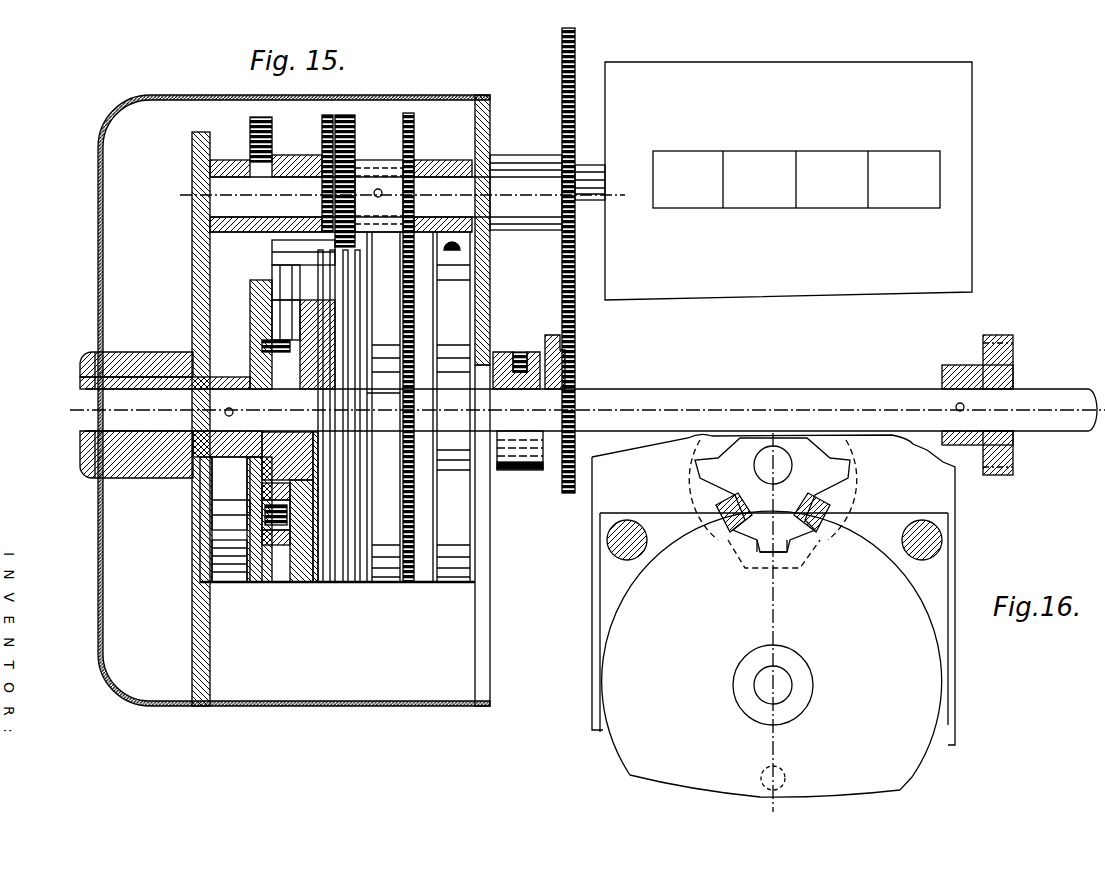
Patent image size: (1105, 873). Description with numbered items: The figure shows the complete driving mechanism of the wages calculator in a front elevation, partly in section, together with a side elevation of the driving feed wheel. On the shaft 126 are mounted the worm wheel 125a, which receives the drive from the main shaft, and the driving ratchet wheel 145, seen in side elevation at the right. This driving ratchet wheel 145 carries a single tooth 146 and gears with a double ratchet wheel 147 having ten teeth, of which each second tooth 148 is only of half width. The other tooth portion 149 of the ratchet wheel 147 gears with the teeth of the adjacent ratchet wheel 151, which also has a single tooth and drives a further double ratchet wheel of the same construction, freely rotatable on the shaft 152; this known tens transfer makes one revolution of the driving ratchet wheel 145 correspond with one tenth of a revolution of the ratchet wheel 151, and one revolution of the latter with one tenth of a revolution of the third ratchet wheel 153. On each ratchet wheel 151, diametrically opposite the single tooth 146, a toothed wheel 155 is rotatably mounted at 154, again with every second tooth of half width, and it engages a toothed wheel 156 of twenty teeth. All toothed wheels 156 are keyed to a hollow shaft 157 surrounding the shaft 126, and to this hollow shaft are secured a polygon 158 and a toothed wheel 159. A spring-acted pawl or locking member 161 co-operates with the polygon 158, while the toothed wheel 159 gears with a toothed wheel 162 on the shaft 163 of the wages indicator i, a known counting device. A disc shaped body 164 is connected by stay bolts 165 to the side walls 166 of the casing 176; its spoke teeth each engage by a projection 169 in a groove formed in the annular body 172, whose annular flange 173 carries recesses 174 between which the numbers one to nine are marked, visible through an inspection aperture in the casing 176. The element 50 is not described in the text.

In FIG. 15, the plate 50 is at (318, 545).
In FIG. 15, the driving ratchet wheel 145 is at (252, 358).
In FIG. 15, the single tooth 146 is at (255, 272).
In FIG. 16, the single tooth 146 is at (800, 530).
In FIG. 15, the double ratchet wheel 147 is at (270, 168).
In FIG. 16, the double ratchet wheel 147 is at (762, 487).
In FIG. 15, the half-width tooth 148 is at (262, 126).
In FIG. 16, the half-width tooth 148 is at (725, 505).
In FIG. 15, the tooth portion 149 is at (332, 114).
In FIG. 15, the ratchet wheel 151 is at (346, 583).
In FIG. 15, the shaft 152 is at (210, 187).
In FIG. 15, the third ratchet wheel 153 is at (423, 583).
In FIG. 15, the mounting point 154 is at (265, 506).
In FIG. 16, the mounting point 154 is at (785, 775).
In FIG. 15, the toothed wheel 155 is at (272, 545).
In FIG. 15, the toothed wheel 156 is at (252, 350).
In FIG. 15, the hollow shaft 157 is at (387, 393).
In FIG. 15, the polygon 158 is at (516, 361).
In FIG. 15, the toothed wheel 159 is at (568, 492).
In FIG. 15, the pawl 161 is at (550, 336).
In FIG. 15, the toothed wheel 162 is at (576, 62).
In FIG. 15, the shaft 163 is at (583, 168).
In FIG. 15, the disc shaped body 164 is at (284, 583).
In FIG. 15, the stay bolts 165 is at (392, 583).
In FIG. 16, the stay bolts 165 is at (944, 530).
In FIG. 15, the side walls 166 is at (193, 640).
In FIG. 16, the side walls 166 is at (773, 589).
In FIG. 15, the projection 169 is at (300, 308).
In FIG. 15, the annular body 172 is at (312, 318).
In FIG. 15, the annular flange 173 is at (302, 583).
In FIG. 15, the recesses 174 is at (398, 473).
In FIG. 15, the casing 176 is at (157, 708).
In FIG. 16, the worm wheel 125a is at (1010, 366).
In FIG. 15, the shaft 126 is at (1068, 393).
In FIG. 15, the wages indicator i is at (847, 76).